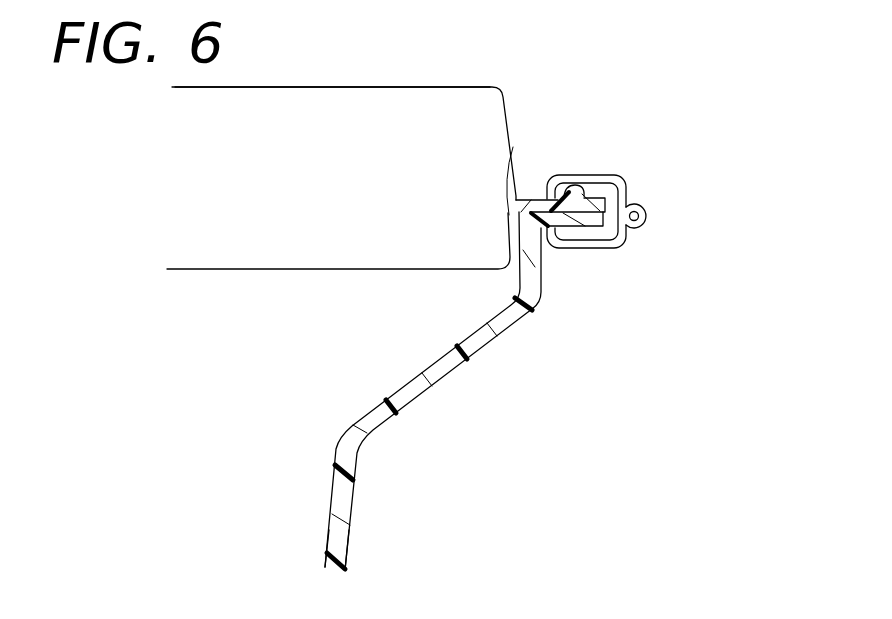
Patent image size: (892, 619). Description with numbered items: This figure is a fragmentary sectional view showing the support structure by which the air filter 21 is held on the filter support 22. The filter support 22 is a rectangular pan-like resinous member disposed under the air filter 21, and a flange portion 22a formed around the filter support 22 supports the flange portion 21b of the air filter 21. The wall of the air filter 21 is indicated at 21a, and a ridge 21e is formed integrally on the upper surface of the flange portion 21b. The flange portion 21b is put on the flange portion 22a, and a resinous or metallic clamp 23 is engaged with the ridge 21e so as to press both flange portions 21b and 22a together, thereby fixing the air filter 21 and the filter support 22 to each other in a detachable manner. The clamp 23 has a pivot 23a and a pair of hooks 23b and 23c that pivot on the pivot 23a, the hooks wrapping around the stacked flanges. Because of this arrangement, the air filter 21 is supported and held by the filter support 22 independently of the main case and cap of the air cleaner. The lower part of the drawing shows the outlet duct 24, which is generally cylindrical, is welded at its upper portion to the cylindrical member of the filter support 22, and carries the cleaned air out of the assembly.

The air filter 21 is at (373, 81).
The panel wall 21a is at (317, 113).
The flange portion 21b is at (598, 205).
The ridge 21e is at (572, 186).
The filter support 22 is at (457, 368).
The flange portion 22a is at (580, 223).
The clamp 23 is at (654, 192).
The pivot 23a is at (643, 216).
The hook 23b is at (620, 176).
The hook 23c is at (613, 243).
The outlet duct 24 is at (345, 558).